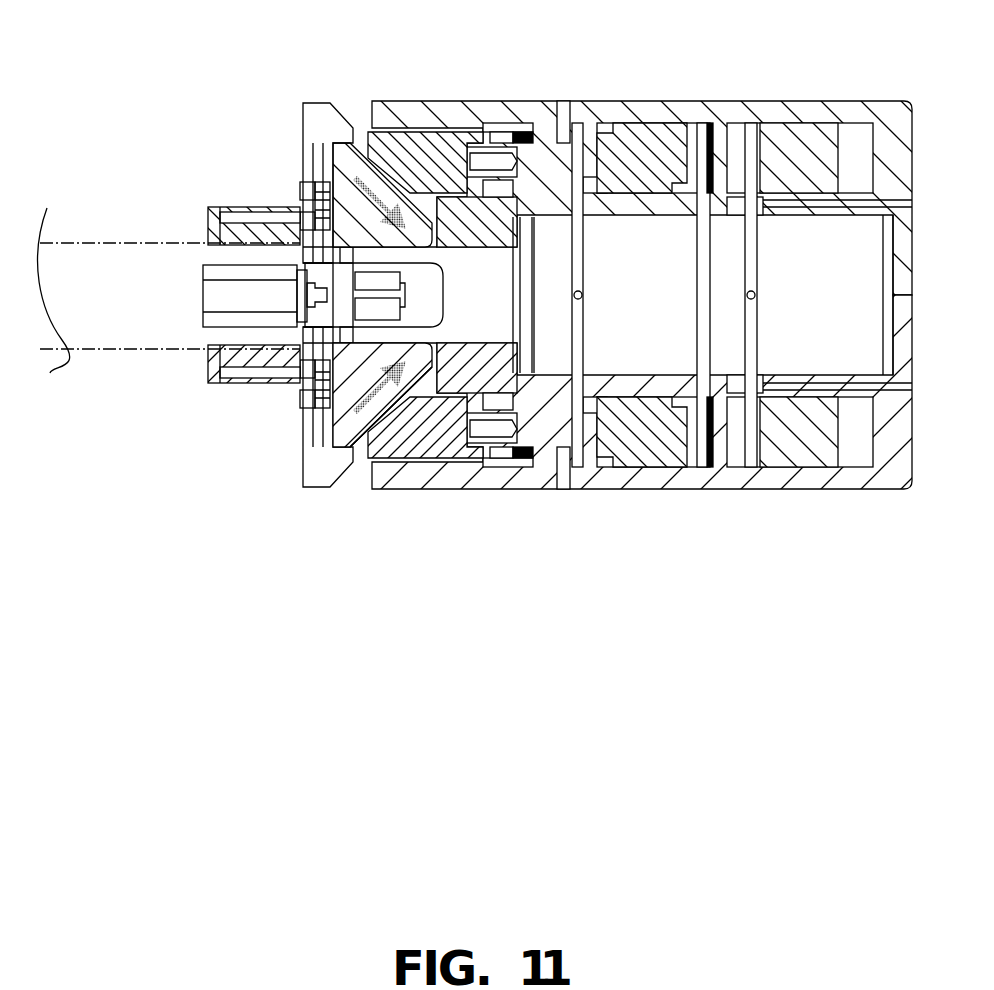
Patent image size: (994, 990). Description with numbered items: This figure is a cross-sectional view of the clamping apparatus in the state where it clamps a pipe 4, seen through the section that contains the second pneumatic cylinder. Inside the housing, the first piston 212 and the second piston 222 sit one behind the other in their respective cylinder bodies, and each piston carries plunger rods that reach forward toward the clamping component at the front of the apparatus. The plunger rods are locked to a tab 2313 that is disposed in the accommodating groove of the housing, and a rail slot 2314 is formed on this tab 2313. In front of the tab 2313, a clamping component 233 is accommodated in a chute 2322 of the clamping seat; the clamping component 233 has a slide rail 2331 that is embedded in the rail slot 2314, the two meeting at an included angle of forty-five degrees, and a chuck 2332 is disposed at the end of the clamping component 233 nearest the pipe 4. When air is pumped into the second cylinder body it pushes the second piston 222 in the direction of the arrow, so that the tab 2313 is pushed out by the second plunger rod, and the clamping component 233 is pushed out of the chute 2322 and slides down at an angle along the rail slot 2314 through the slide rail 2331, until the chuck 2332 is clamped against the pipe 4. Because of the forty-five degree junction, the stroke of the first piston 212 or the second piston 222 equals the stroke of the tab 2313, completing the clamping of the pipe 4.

The pipe 4 is at (135, 270).
The first piston 212 is at (825, 137).
The second piston 222 is at (650, 137).
The clamping component 233 is at (350, 158).
The tab 2313 is at (427, 135).
The rail slot 2314 is at (391, 407).
The chute 2322 is at (360, 462).
The slide rail 2331 is at (405, 410).
The chuck 2332 is at (240, 230).